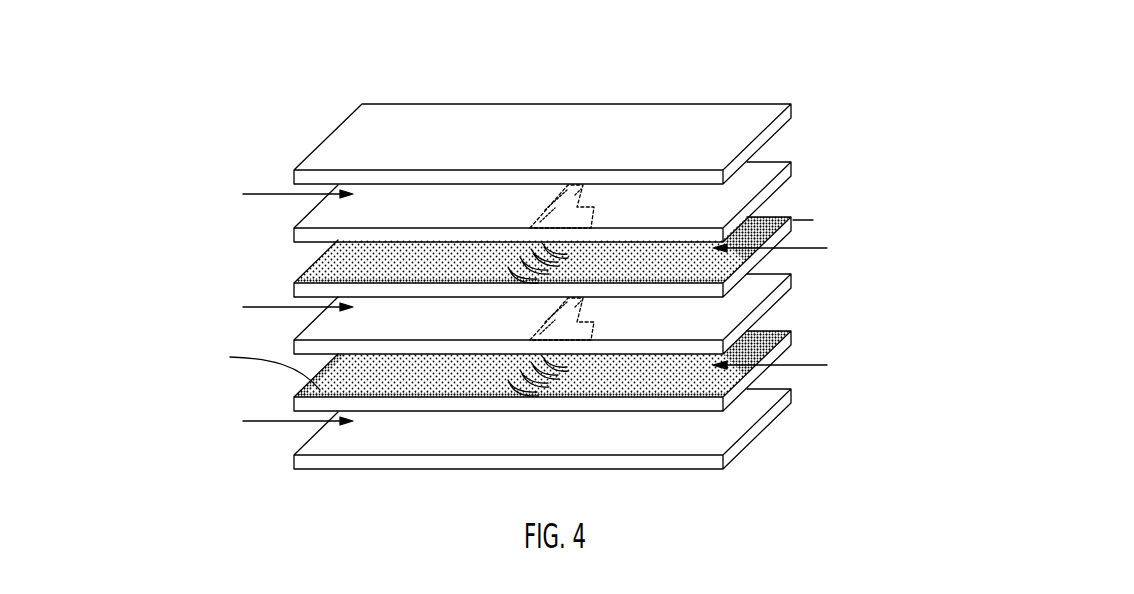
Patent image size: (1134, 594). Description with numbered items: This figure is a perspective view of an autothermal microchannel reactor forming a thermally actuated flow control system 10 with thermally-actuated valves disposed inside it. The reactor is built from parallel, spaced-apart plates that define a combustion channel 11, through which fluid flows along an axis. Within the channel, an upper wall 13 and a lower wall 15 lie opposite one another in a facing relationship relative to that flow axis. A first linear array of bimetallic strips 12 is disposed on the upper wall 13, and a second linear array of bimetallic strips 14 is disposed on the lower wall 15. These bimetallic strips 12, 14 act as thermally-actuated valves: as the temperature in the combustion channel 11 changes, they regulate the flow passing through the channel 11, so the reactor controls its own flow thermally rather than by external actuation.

The thermally actuated flow control system 10 is at (780, 93).
The combustion channel 11 is at (782, 203).
The first linear array of bimetallic strips 12 is at (508, 253).
The upper wall 13 is at (788, 296).
The second linear array of bimetallic strips 14 is at (595, 202).
The lower wall 15 is at (793, 346).